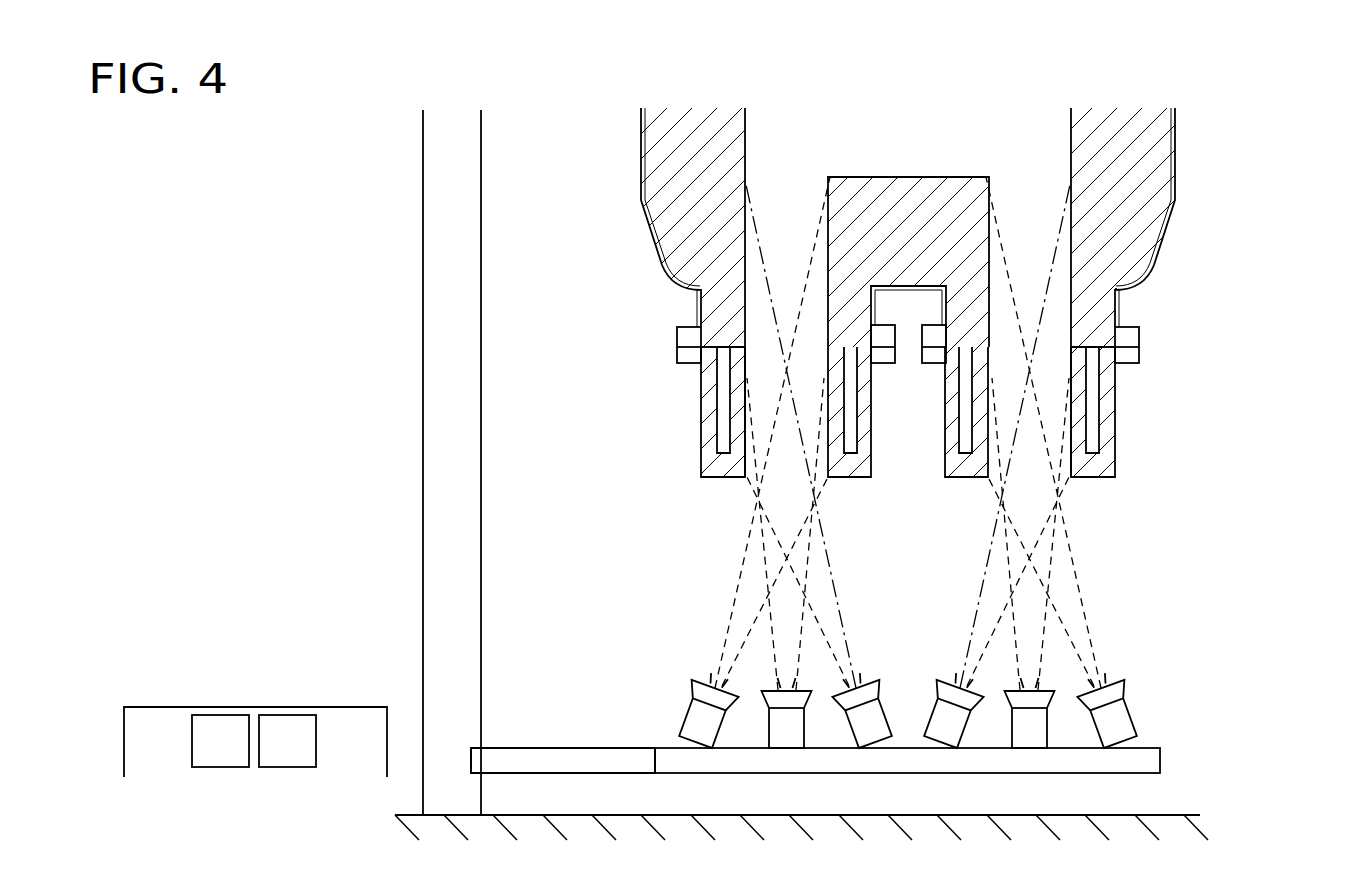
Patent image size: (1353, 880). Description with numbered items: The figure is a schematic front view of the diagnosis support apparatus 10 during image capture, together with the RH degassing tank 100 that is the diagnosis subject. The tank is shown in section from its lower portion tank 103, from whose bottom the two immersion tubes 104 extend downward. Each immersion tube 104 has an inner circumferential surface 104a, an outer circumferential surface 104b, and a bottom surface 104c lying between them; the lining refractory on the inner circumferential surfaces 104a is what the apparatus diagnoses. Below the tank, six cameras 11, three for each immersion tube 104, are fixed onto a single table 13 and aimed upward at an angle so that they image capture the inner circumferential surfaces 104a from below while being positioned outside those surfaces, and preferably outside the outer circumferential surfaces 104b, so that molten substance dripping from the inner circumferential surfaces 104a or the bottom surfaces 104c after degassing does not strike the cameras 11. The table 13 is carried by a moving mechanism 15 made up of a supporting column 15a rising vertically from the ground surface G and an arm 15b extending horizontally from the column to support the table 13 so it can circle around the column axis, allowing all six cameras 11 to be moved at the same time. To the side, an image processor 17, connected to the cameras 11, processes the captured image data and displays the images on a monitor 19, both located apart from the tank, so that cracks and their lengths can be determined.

The diagnosis support apparatus 10 is at (867, 462).
The camera 11 is at (722, 684).
The table 13 is at (1162, 755).
The moving mechanism 15 is at (539, 462).
The supporting column 15a is at (481, 278).
The arm 15b is at (563, 748).
The image processor 17 is at (221, 715).
The monitor 19 is at (287, 715).
The RH degassing tank 100 is at (942, 346).
The lower portion tank 103 is at (1176, 180).
The immersion tube 104 is at (702, 412).
The inner circumferential surface 104a is at (748, 450).
The outer circumferential surface 104b is at (703, 450).
The bottom surface 104c is at (722, 478).
The ground surface G is at (1162, 813).